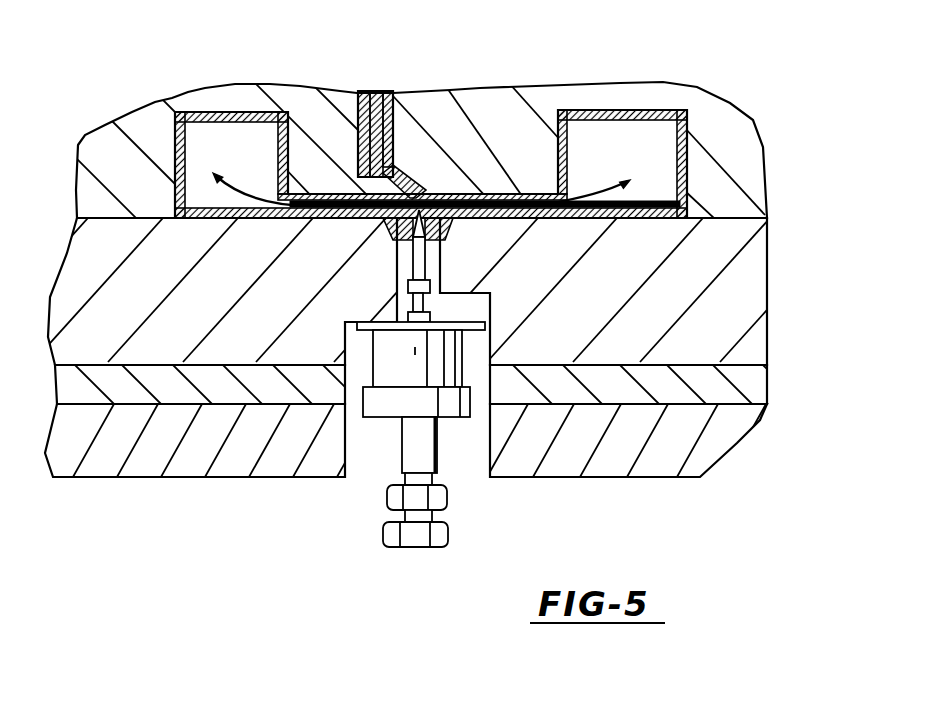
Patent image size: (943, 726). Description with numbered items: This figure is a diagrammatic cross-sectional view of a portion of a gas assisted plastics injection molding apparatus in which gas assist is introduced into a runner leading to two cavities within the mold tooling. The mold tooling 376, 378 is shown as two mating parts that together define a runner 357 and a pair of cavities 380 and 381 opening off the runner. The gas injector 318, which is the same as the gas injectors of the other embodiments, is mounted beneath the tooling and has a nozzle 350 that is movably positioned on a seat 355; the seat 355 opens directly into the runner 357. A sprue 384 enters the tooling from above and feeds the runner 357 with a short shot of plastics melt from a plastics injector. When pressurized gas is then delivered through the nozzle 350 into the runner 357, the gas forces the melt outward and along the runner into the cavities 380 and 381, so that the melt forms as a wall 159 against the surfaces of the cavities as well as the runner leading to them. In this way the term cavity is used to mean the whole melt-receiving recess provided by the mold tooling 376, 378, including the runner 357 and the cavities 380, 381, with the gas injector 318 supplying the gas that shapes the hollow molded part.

The wall 159 is at (603, 108).
The gas injector 318 is at (373, 440).
The nozzle 350 is at (423, 195).
The seat 355 is at (440, 235).
The runner 357 is at (363, 213).
The mold tooling 376 is at (733, 143).
The mold tooling 378 is at (735, 298).
The cavity 380 is at (653, 142).
The cavity 381 is at (240, 138).
The sprue 384 is at (395, 124).